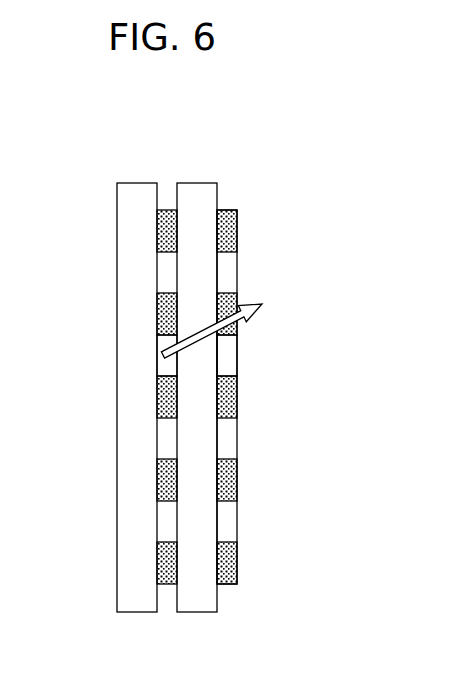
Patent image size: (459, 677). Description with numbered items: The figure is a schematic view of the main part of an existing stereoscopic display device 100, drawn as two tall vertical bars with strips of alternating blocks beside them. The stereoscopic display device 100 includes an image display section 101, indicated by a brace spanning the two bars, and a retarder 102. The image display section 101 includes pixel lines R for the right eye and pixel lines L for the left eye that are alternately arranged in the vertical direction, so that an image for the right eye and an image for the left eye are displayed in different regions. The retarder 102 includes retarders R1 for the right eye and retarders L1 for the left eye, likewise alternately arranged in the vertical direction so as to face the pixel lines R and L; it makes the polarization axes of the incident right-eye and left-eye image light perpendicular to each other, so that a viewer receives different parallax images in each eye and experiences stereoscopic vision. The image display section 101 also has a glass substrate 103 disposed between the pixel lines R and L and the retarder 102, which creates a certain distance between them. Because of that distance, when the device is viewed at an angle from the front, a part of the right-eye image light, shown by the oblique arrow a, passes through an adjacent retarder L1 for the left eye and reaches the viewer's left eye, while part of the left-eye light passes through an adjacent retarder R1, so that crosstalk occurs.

The stereoscopic display device 100 is at (259, 127).
The image display section 101 is at (220, 177).
The retarder 102 is at (236, 222).
The glass substrate 103 is at (211, 191).
The pixel line for the left eye L is at (158, 310).
The pixel line for the right eye R is at (168, 368).
The retarder for the left eye L1 is at (236, 298).
The retarder for the right eye R1 is at (231, 357).
The arrow a is at (263, 305).